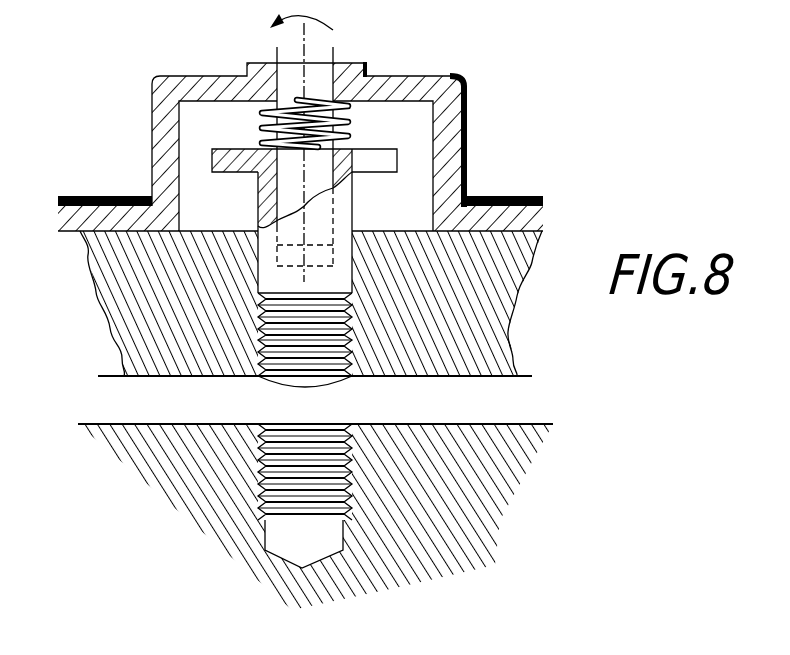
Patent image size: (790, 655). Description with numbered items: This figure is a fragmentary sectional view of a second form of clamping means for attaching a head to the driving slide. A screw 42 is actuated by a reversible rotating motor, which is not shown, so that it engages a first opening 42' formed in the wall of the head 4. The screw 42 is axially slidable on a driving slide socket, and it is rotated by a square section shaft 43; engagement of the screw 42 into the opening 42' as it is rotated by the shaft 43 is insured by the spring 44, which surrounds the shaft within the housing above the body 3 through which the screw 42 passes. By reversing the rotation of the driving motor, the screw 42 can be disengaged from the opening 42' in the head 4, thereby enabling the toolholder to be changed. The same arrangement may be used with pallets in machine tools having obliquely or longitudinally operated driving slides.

The first member / base plate 3 is at (501, 309).
The head 4 is at (482, 537).
The screw 42 is at (190, 200).
The first opening 42' is at (324, 481).
The square section shaft 43 is at (320, 214).
The spring 44 is at (347, 132).